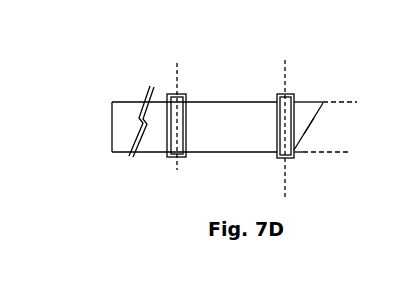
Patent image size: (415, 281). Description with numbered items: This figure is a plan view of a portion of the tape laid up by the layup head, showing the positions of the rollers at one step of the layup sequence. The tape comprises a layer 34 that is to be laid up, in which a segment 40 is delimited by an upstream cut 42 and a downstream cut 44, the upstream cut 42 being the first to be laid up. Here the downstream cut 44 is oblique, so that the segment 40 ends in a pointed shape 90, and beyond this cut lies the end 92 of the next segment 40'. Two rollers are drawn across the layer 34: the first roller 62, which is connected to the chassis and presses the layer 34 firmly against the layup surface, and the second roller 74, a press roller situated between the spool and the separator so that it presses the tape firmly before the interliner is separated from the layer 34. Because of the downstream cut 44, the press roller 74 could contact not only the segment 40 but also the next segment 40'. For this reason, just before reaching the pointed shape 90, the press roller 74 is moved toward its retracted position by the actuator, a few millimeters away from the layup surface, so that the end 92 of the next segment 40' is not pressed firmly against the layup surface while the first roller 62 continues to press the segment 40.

The layer to be laid up 34 is at (233, 152).
The segment 40 is at (194, 106).
The next segment 40' is at (335, 109).
The upstream cut 42 is at (112, 132).
The downstream cut 44 is at (309, 122).
The first roller 62 is at (186, 95).
The second roller 74 is at (295, 93).
The pointed shape 90 is at (307, 101).
The end of the next segment 92 is at (299, 157).